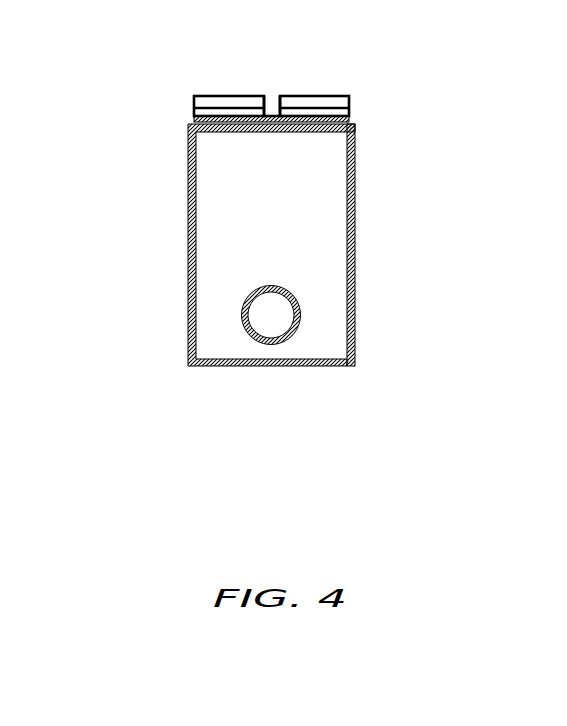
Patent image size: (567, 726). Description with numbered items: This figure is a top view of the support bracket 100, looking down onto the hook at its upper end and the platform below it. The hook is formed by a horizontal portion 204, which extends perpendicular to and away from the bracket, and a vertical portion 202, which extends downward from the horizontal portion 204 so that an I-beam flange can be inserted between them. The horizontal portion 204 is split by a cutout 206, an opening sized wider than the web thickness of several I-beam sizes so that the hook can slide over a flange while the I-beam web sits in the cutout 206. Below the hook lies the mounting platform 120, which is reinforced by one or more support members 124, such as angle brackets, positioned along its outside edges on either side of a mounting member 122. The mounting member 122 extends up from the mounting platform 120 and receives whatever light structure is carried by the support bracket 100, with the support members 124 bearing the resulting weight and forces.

The support bracket 100 is at (118, 56).
The mounting platform 120 is at (332, 347).
The mounting member 122 is at (267, 323).
The support member 124 is at (357, 240).
The vertical portion 202 is at (340, 115).
The horizontal portion 204 is at (338, 98).
The cutout 206 is at (270, 76).